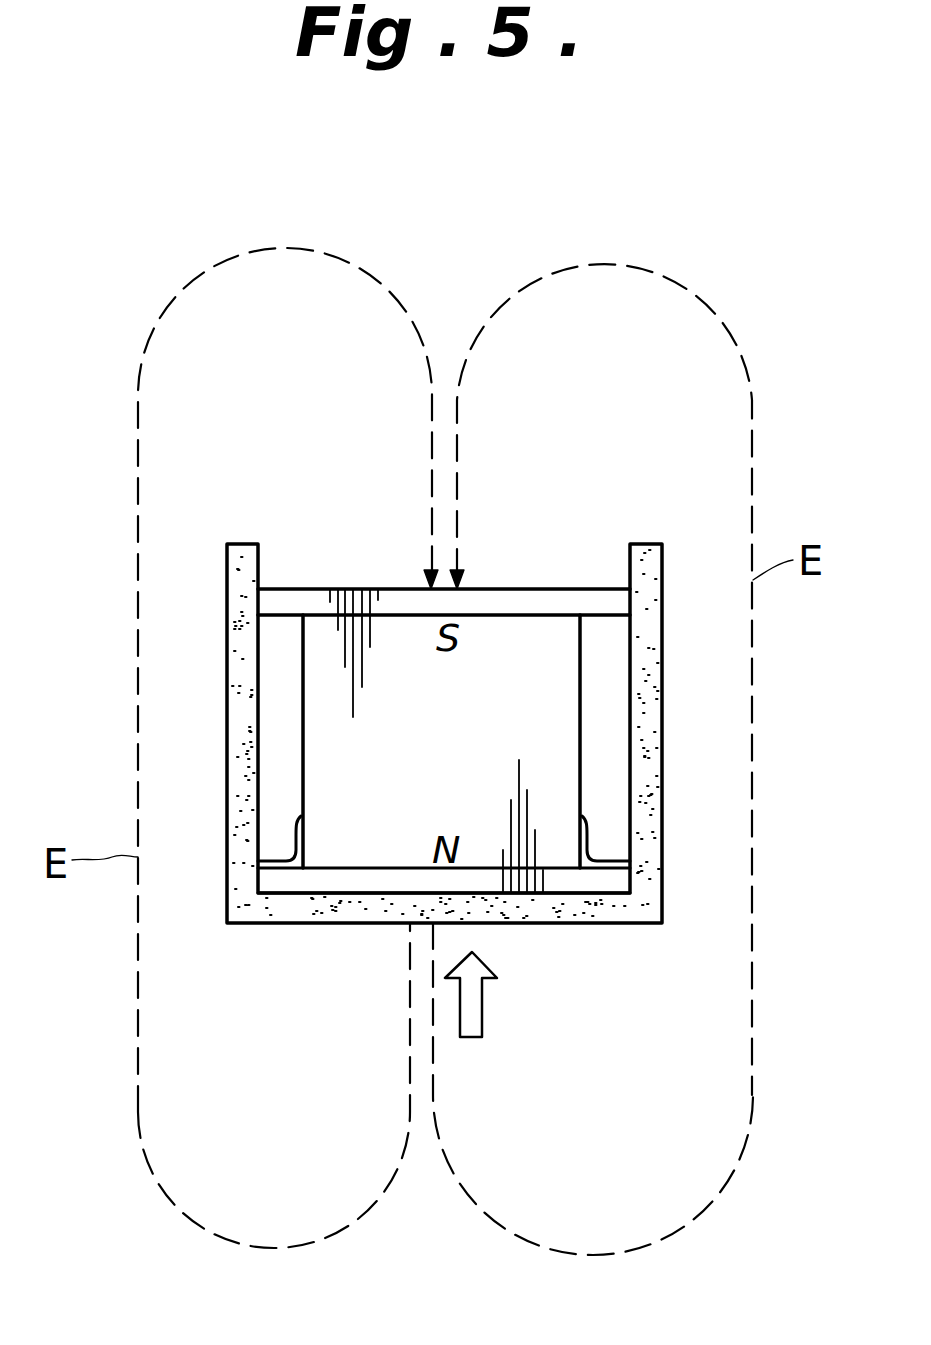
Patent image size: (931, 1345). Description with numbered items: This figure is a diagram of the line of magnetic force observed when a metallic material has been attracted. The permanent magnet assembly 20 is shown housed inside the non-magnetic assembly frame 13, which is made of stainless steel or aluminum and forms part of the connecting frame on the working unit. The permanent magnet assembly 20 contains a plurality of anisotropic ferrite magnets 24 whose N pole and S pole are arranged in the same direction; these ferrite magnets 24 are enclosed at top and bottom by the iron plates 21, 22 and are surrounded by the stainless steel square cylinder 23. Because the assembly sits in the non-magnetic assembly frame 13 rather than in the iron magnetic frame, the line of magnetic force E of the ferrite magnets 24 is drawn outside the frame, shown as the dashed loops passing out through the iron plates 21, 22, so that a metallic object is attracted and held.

The non-magnetic assembly frame 13 is at (600, 910).
The permanent magnet assembly 20 is at (537, 590).
The iron plate 21 is at (322, 598).
The iron plate 22 is at (329, 880).
The stainless steel square cylinder 23 is at (302, 706).
The anisotropic ferrite magnets 24 is at (550, 720).